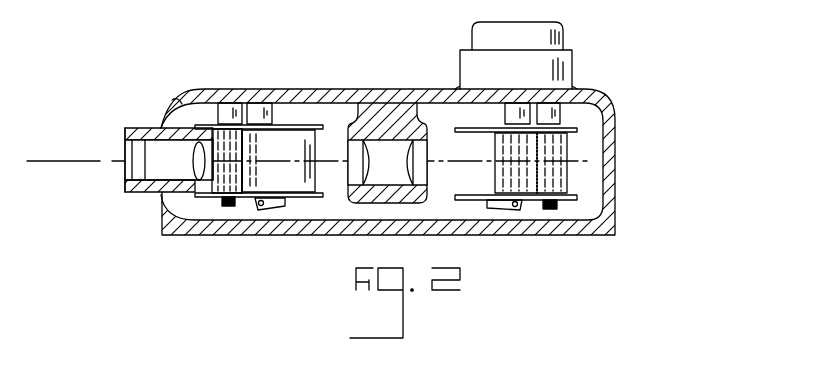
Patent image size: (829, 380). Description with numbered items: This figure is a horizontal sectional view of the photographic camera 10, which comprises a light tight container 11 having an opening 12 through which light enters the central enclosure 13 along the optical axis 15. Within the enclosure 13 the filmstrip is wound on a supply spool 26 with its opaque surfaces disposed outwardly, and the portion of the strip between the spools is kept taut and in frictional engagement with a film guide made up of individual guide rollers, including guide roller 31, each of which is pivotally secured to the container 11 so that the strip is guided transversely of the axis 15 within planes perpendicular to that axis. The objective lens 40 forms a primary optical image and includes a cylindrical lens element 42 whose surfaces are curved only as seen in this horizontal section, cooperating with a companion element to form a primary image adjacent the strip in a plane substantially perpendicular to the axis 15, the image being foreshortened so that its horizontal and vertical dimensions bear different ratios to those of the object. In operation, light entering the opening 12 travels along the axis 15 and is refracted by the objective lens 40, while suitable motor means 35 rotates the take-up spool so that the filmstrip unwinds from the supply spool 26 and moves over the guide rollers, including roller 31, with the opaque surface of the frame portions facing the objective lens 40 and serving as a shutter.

The photographic camera 10 is at (186, 241).
The light tight container 11 is at (195, 88).
The opening 12 is at (156, 127).
The central enclosure 13 is at (326, 112).
The optical axis 15 is at (98, 157).
The supply spool 26 is at (300, 128).
The guide roller 31 is at (455, 129).
The motor means 35 is at (566, 45).
The objective lens 40 is at (128, 192).
The cylindrical lens element 42 is at (210, 198).